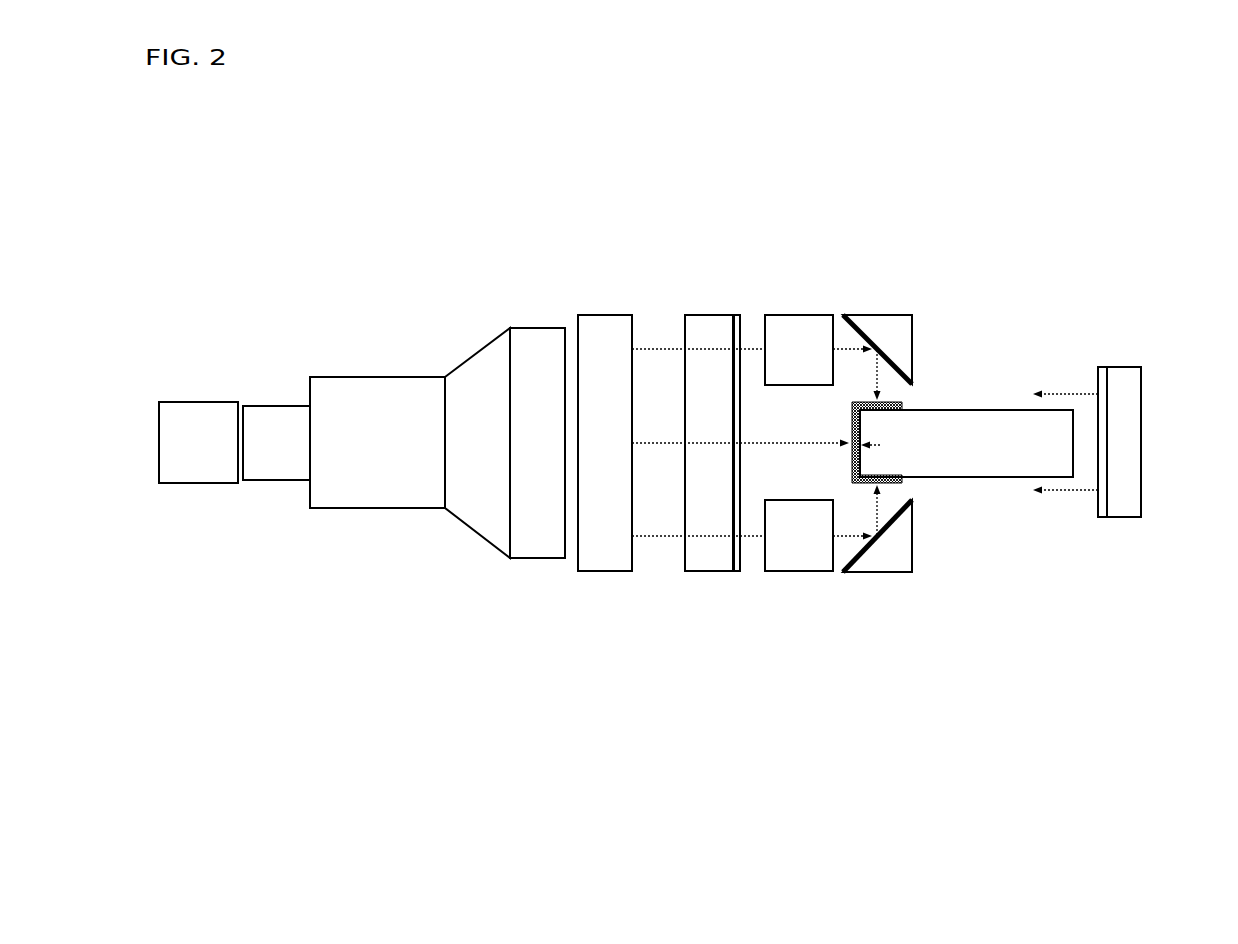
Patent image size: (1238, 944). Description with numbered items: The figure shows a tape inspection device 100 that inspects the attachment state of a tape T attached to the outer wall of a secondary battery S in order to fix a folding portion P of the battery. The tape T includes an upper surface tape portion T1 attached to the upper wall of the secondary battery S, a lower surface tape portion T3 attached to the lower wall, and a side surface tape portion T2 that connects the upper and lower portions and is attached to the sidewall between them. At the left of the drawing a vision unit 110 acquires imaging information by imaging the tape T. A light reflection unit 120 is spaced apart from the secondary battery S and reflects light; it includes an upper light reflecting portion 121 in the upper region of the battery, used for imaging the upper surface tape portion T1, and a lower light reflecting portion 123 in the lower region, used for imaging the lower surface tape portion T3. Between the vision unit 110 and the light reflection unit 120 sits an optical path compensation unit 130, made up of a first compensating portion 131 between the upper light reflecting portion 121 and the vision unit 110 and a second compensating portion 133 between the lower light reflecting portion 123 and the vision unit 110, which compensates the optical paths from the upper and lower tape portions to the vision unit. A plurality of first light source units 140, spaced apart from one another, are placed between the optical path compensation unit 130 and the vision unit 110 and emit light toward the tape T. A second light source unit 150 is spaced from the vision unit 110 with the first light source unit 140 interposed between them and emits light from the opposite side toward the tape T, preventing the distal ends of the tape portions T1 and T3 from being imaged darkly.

The tape inspection device 100 is at (400, 182).
The vision unit 110 is at (534, 330).
The light reflection unit 120 is at (901, 431).
The upper light reflecting portion 121 is at (880, 315).
The lower light reflecting portion 123 is at (883, 572).
The optical path compensation unit 130 is at (773, 431).
The first compensating portion 131 is at (808, 315).
The second compensating portion 133 is at (800, 572).
The first light source unit 140 is at (710, 565).
The second light source unit 150 is at (1135, 436).
The secondary battery S is at (1022, 411).
The folding portion P is at (864, 445).
The tape T is at (1022, 556).
The upper surface tape portion T1 is at (903, 405).
The side surface tape portion T2 is at (862, 432).
The lower surface tape portion T3 is at (903, 481).